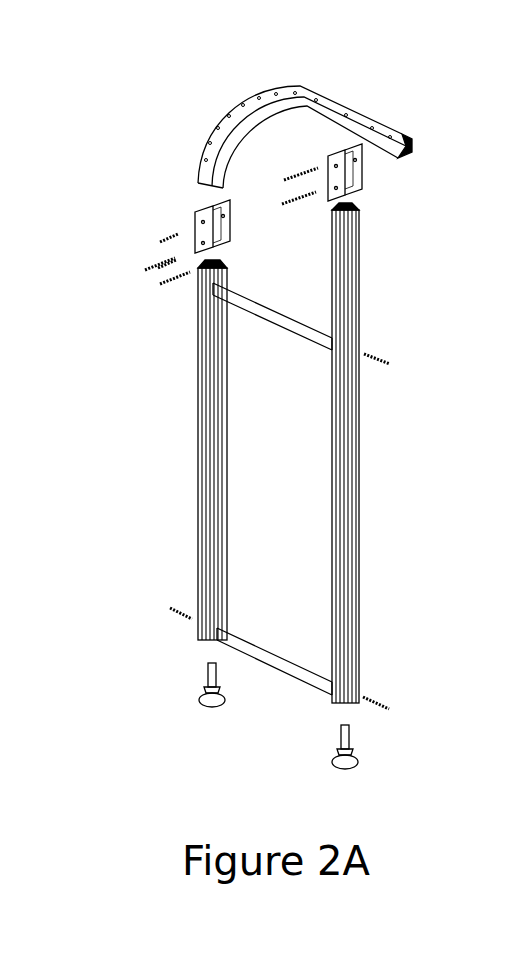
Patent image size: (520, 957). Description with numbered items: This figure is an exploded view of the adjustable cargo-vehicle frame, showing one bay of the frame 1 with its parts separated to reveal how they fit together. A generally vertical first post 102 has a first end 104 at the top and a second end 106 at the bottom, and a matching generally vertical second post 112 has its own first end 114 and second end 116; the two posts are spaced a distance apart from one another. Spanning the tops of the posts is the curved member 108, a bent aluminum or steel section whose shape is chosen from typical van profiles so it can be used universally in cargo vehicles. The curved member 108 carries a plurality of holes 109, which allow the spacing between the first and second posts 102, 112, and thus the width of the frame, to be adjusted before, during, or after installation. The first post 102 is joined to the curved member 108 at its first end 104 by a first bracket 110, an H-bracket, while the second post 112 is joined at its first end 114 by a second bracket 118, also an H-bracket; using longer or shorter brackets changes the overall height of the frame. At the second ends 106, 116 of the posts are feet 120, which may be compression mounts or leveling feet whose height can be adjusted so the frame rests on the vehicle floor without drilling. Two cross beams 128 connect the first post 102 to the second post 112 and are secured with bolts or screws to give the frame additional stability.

The sign frame 1 is at (512, 514).
The first post 102 is at (200, 430).
The first end 104 is at (168, 259).
The second end 106 is at (170, 590).
The curved member 108 is at (226, 118).
The holes 109 is at (338, 120).
The first bracket 110 is at (195, 232).
The second post 112 is at (354, 478).
The first end 114 is at (377, 247).
The second end 116 is at (384, 678).
The second bracket 118 is at (347, 178).
The foot 120 is at (212, 648).
The cross beam 128 is at (303, 328).